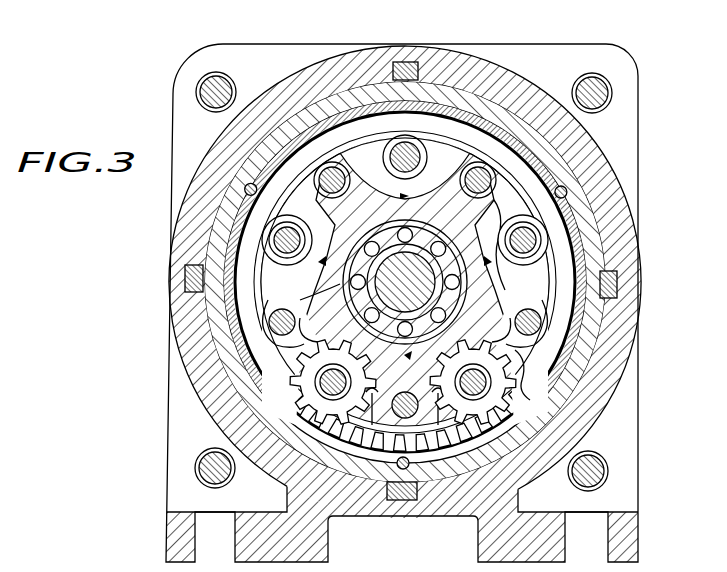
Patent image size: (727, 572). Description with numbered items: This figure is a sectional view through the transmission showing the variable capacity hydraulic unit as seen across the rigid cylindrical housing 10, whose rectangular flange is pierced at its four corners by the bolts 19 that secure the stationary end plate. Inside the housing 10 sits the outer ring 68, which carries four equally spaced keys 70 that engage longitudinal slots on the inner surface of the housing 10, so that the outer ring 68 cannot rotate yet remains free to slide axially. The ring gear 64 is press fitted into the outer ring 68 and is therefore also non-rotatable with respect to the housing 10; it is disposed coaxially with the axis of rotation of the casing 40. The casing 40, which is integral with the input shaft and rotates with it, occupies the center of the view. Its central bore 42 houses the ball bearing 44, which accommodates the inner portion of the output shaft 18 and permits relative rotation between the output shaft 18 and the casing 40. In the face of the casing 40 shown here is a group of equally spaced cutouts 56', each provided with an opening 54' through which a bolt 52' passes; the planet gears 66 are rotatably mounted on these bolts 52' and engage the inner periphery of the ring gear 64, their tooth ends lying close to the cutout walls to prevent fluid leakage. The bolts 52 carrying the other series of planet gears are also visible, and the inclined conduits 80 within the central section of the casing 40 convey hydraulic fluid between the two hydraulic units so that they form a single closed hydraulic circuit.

The housing 10 is at (434, 47).
The bolts 19 is at (212, 91).
The outer ring 68 is at (318, 103).
The keys 70 is at (397, 62).
The ring gear 64 is at (472, 107).
The ball bearing 44 is at (376, 257).
The casing 40 is at (270, 327).
The cutouts 56' is at (563, 205).
The opening 54' is at (593, 240).
The bolts 52 is at (599, 328).
The bolts 52' is at (570, 398).
The conduits 80 is at (348, 287).
The central bore 42 is at (449, 295).
The output shaft 18 is at (407, 268).
The planet gears 66 is at (365, 405).